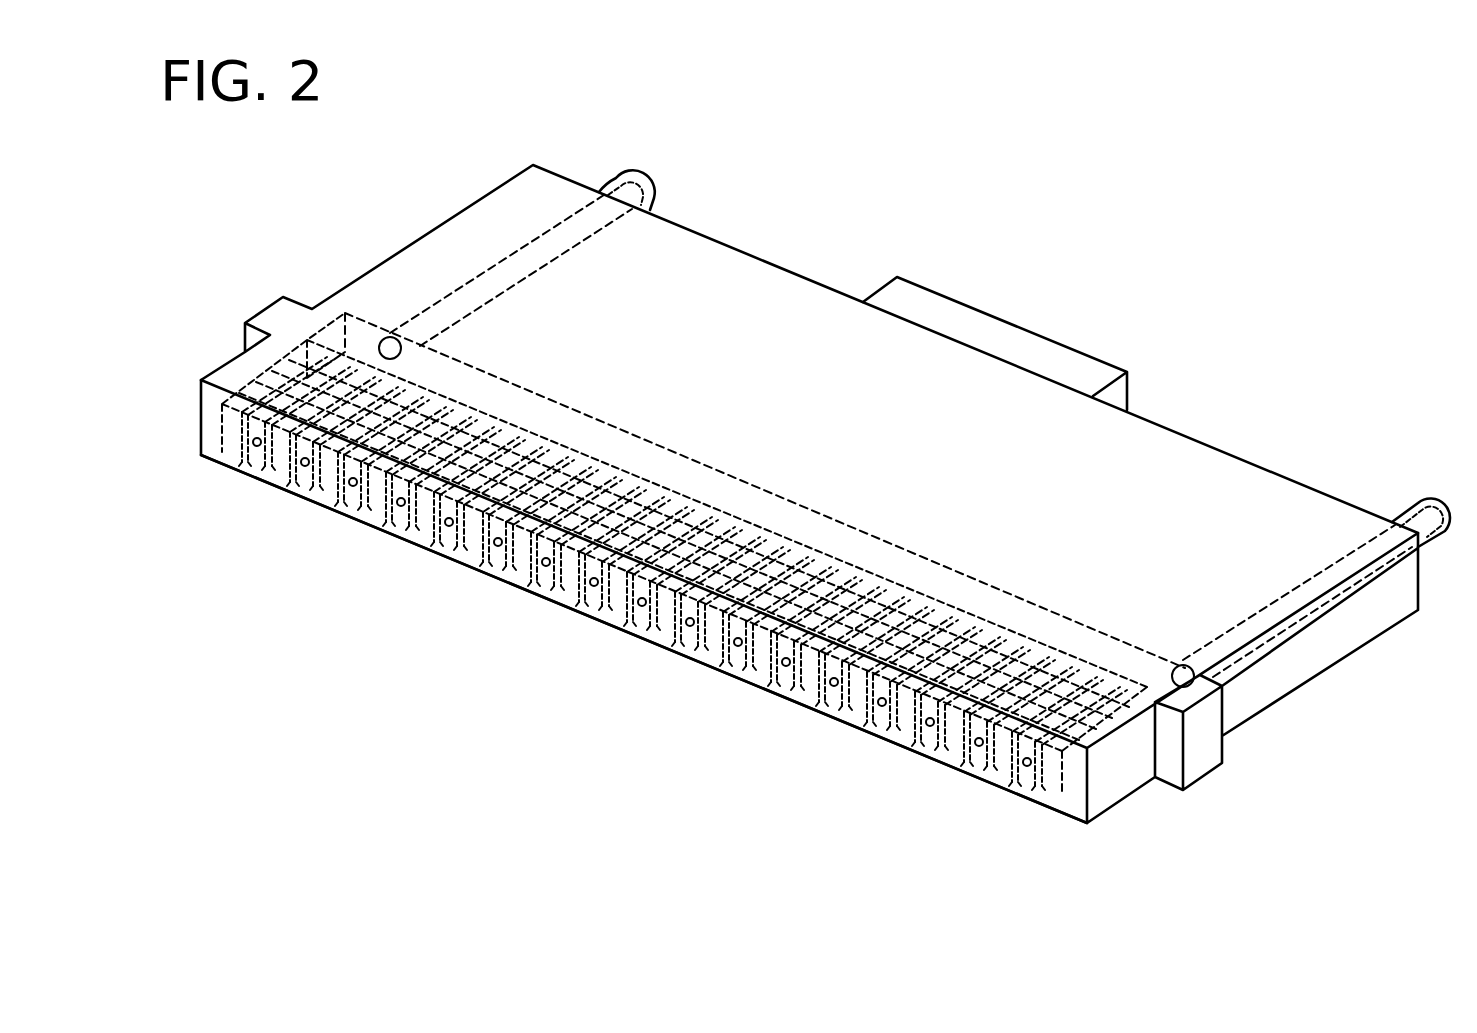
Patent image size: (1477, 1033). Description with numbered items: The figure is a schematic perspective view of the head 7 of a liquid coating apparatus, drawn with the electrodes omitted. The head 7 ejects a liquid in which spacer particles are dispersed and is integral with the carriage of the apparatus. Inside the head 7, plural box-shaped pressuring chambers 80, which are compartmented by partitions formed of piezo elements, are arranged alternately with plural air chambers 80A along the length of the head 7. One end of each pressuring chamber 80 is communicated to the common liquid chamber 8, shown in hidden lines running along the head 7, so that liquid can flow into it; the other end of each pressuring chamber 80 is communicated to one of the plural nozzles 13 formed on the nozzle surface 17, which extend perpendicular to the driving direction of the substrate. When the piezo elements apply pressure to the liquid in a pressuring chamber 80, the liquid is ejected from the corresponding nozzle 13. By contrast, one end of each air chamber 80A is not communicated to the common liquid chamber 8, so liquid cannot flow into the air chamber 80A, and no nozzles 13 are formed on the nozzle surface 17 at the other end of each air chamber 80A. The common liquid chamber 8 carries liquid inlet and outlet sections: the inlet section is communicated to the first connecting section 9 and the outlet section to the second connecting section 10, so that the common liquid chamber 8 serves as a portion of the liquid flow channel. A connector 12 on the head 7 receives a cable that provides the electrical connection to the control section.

The head 7 is at (832, 466).
The common liquid chamber 8 is at (662, 443).
The first connecting section 9 is at (613, 180).
The second connecting section 10 is at (1433, 500).
The connector 12 is at (1002, 318).
The nozzles 13 is at (256, 447).
The nozzle surface 17 is at (372, 528).
The pressuring chambers 80 is at (639, 538).
The air chamber 80A is at (265, 388).